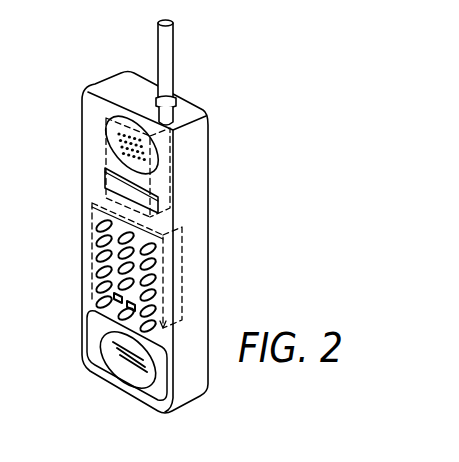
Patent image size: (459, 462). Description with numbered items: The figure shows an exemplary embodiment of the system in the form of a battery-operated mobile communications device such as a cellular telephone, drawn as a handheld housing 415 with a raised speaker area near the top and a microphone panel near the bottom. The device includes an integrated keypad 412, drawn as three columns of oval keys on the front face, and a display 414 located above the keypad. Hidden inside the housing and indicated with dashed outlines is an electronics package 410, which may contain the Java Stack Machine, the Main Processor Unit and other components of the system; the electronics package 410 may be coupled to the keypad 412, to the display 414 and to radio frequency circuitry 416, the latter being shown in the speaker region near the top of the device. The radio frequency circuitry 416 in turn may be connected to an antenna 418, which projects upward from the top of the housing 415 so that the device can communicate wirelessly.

The electronics package 410 is at (182, 287).
The keypad 412 is at (95, 263).
The display 414 is at (104, 190).
The housing 415 is at (208, 212).
The radio frequency circuitry 416 is at (108, 158).
The antenna 418 is at (172, 58).